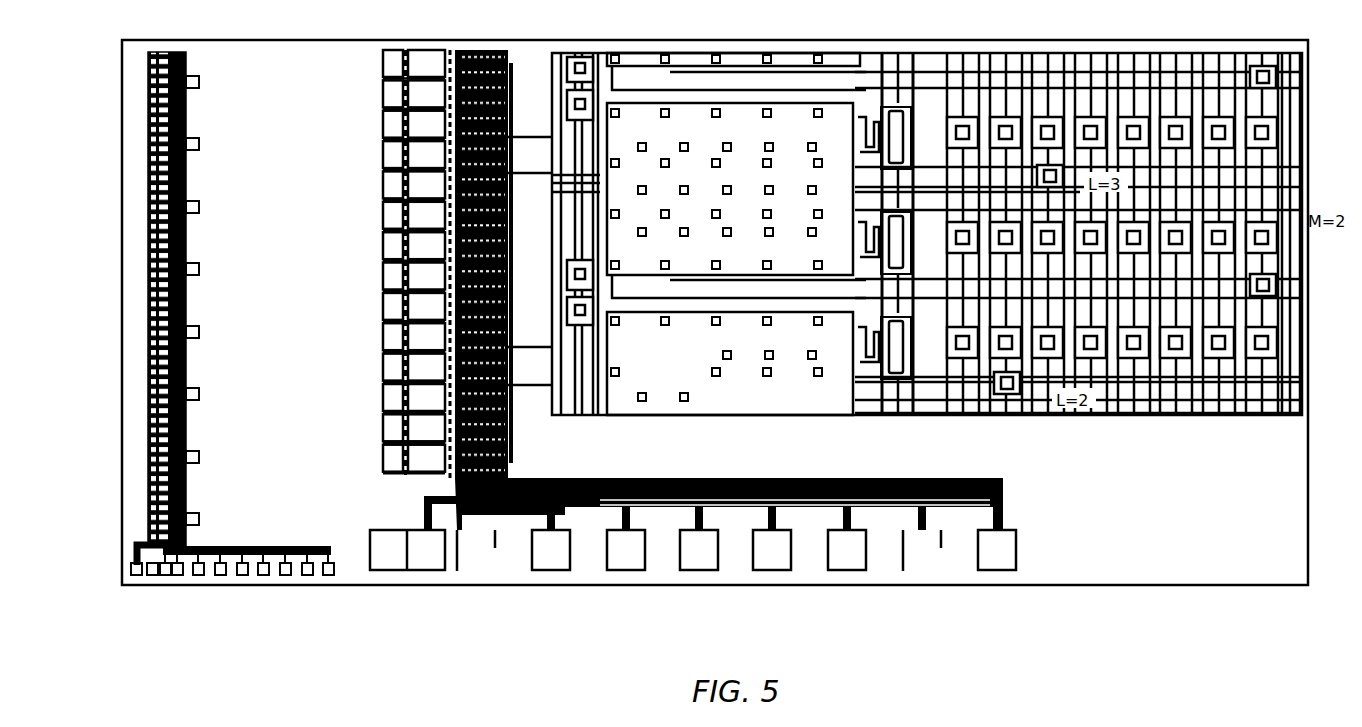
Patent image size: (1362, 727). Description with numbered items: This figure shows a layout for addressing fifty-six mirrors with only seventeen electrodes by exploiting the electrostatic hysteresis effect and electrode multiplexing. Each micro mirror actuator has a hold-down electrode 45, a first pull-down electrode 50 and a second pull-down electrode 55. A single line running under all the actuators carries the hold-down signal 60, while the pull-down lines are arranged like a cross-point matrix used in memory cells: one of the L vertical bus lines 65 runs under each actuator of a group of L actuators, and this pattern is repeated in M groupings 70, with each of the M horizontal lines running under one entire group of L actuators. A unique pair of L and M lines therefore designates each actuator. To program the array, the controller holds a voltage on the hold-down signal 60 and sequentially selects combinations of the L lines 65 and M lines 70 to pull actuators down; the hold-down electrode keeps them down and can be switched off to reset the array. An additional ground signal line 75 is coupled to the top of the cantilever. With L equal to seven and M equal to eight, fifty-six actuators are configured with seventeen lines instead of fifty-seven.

The M groupings 70 is at (150, 50).
The ground signal line 75 is at (424, 572).
The L vertical bus lines 65 is at (927, 574).
The hold-down signal 60 is at (1098, 550).
The hold-down electrode 45 is at (660, 378).
The second pull-down electrode 55 is at (779, 410).
The first pull-down electrode 50 is at (833, 338).